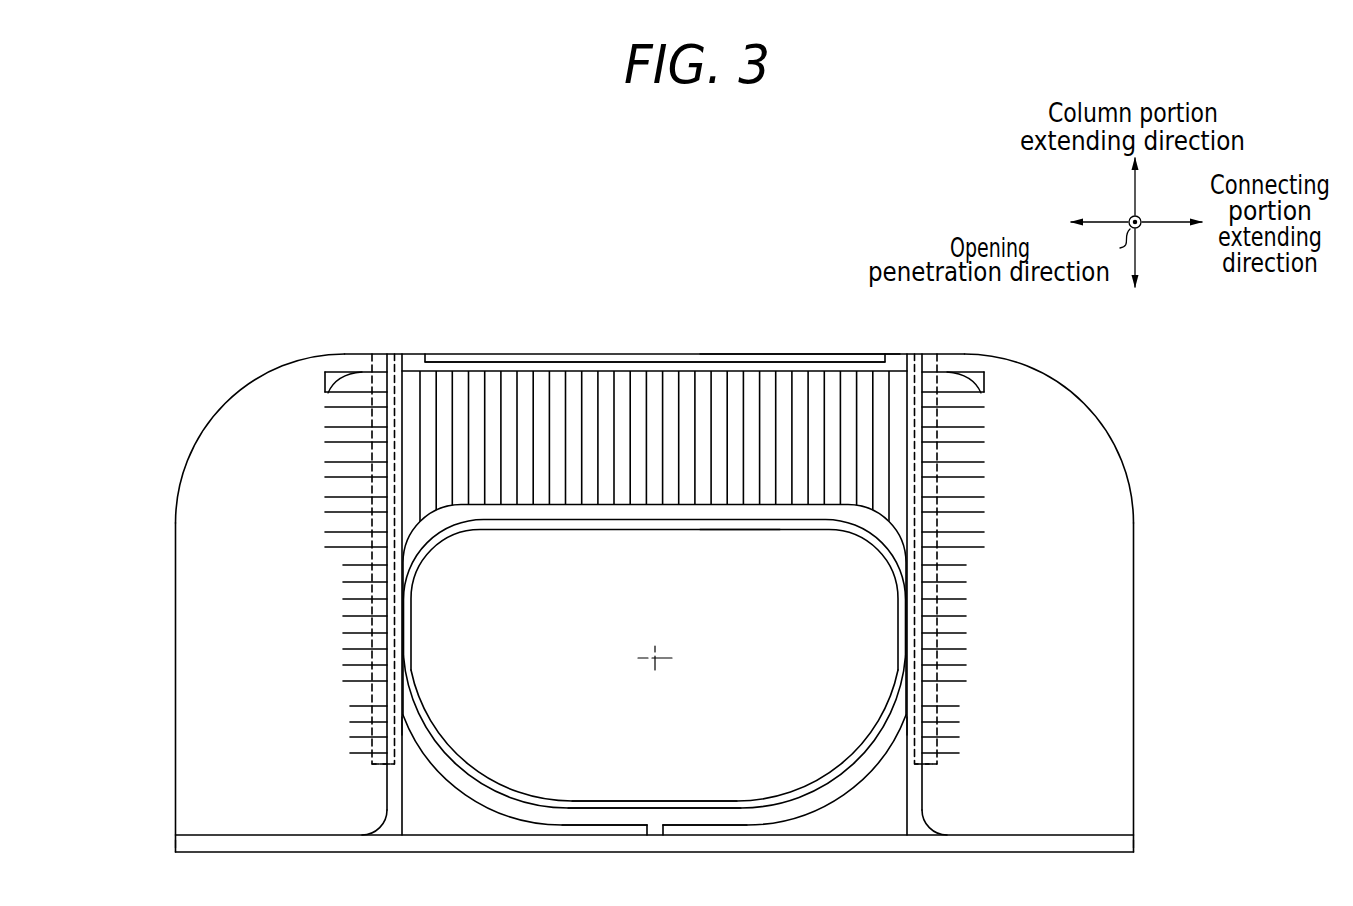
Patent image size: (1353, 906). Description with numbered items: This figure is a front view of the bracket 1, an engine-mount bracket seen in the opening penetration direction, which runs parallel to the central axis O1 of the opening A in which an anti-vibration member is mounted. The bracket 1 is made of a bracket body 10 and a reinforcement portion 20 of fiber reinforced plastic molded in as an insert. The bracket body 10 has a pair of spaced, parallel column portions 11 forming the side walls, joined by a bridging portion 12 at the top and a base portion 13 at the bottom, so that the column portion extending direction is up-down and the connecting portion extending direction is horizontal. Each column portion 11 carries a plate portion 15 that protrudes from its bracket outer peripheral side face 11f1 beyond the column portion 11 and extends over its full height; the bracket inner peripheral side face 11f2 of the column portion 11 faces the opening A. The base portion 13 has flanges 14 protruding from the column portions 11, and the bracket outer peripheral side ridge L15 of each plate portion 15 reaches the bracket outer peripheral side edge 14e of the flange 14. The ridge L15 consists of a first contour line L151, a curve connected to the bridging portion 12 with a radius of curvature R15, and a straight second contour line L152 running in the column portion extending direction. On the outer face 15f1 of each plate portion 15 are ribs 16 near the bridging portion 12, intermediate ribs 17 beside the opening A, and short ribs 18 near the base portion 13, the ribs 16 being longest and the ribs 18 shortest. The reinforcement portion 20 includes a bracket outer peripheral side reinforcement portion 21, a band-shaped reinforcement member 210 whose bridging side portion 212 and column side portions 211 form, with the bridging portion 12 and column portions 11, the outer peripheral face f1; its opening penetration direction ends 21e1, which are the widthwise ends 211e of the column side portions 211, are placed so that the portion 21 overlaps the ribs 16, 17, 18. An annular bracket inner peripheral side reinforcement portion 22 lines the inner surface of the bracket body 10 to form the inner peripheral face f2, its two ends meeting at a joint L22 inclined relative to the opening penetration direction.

The bracket 1 is at (447, 247).
The bracket body 10 is at (281, 363).
The column portion 11 is at (394, 825).
The bracket outer peripheral side face 11f1 is at (360, 836).
The bracket inner peripheral side face 11f2 is at (405, 783).
The bridging portion 12 is at (786, 436).
The base portion 13 is at (669, 834).
The flange 14 is at (253, 843).
The bracket outer peripheral side edge 14e is at (172, 843).
The plate portion 15 is at (222, 690).
The outer face 15f1 is at (210, 744).
The rib 16 is at (328, 397).
The rib 17 is at (345, 688).
The rib 18 is at (350, 745).
The reinforcement portion 20 is at (728, 334).
The bracket outer peripheral side reinforcement portion 21 is at (385, 380).
The bracket inner peripheral side reinforcement portion 22 is at (720, 800).
The reinforcement member 210 is at (678, 356).
The column side portion 211 is at (670, 789).
The bridging side portion 212 is at (655, 320).
The opening penetration direction end 21e1 is at (371, 381).
The widthwise end 211e is at (716, 314).
The bracket outer peripheral side ridge L15 is at (108, 412).
The first contour line L151 is at (207, 424).
The second contour line L152 is at (176, 580).
The radius of curvature R15 is at (270, 462).
The outer peripheral face f1 is at (808, 354).
The inner peripheral face f2 is at (743, 533).
The joint L22 is at (574, 793).
The central axis O1 is at (650, 661).
The opening A is at (577, 640).